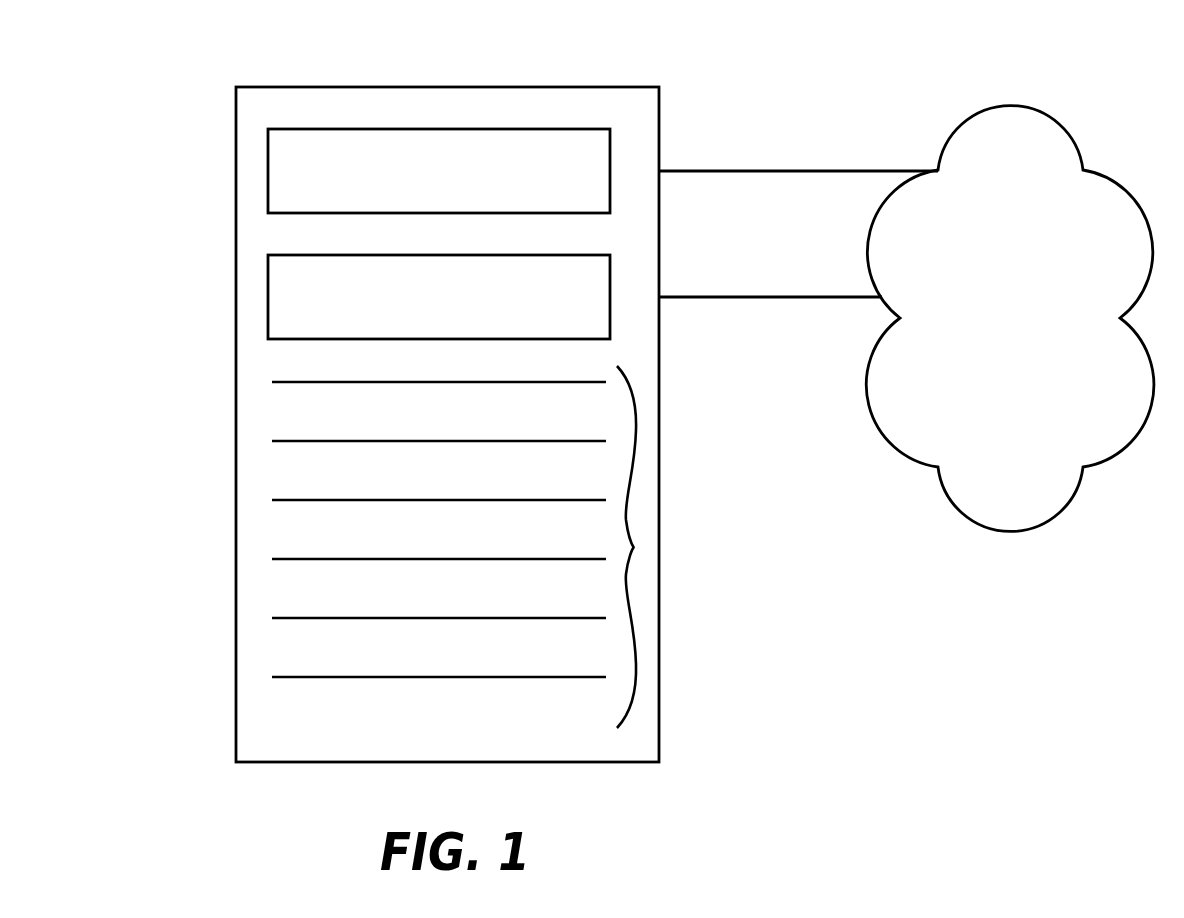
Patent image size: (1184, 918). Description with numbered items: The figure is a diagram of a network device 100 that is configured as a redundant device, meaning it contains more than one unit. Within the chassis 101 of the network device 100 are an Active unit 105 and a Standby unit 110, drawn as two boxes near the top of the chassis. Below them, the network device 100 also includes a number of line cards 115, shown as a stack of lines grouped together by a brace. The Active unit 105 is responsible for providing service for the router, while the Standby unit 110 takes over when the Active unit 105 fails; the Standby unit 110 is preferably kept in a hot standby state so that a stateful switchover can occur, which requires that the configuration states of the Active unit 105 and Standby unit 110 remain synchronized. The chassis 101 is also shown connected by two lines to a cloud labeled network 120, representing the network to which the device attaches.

The network device 100 is at (170, 748).
The chassis 101 is at (613, 86).
The Active unit 105 is at (273, 177).
The Standby unit 110 is at (273, 305).
The line cards 115 is at (633, 547).
The network 120 is at (1017, 487).